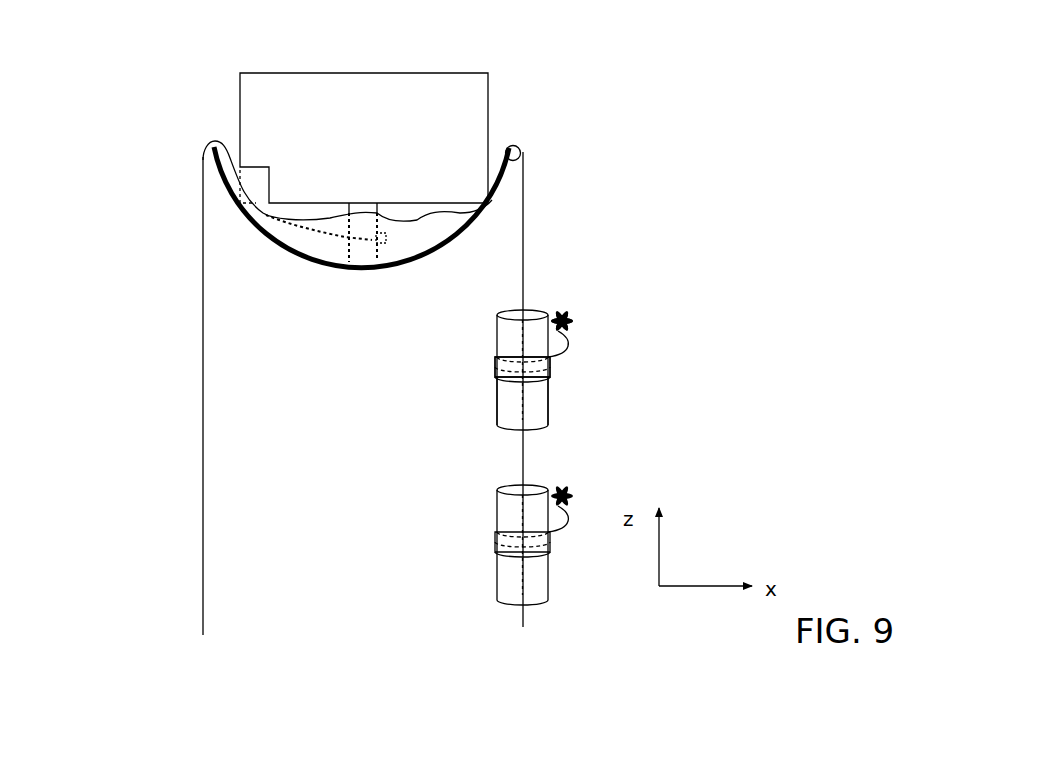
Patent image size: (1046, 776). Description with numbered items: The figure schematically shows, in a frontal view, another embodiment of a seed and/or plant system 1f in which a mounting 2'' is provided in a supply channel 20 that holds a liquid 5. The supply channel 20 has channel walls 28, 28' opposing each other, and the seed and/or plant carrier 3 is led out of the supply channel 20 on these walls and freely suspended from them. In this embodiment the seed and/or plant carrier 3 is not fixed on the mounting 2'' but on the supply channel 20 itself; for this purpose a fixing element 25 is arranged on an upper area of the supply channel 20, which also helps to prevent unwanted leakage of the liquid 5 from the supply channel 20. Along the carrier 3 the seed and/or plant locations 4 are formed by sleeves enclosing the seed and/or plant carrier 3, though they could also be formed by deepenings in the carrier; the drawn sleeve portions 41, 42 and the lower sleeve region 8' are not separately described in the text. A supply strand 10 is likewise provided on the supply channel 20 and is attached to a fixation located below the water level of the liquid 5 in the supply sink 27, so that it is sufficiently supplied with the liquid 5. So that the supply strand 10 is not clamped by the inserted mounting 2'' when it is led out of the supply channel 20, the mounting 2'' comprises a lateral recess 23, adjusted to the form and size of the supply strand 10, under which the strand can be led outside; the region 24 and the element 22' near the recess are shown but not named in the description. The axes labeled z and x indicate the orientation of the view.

The seed and/or plant system 1f is at (797, 118).
The mounting 2'' is at (508, 126).
The seed and/or plant carrier 3 is at (523, 228).
The seed and/or plant locations 4 is at (585, 313).
The liquid 5 is at (312, 220).
The lower weight 8' is at (688, 416).
The supply strand 10 is at (203, 498).
The supply channel 20 is at (215, 167).
The sensor 22' is at (237, 294).
The lateral recess 23 is at (262, 183).
The liquid 24 is at (367, 225).
The fixing element 25 is at (520, 152).
The supply sink 27 is at (397, 248).
The channel wall 28 is at (668, 163).
The channel wall 28' is at (161, 111).
The flower 41 is at (566, 327).
The ring 42 is at (548, 362).